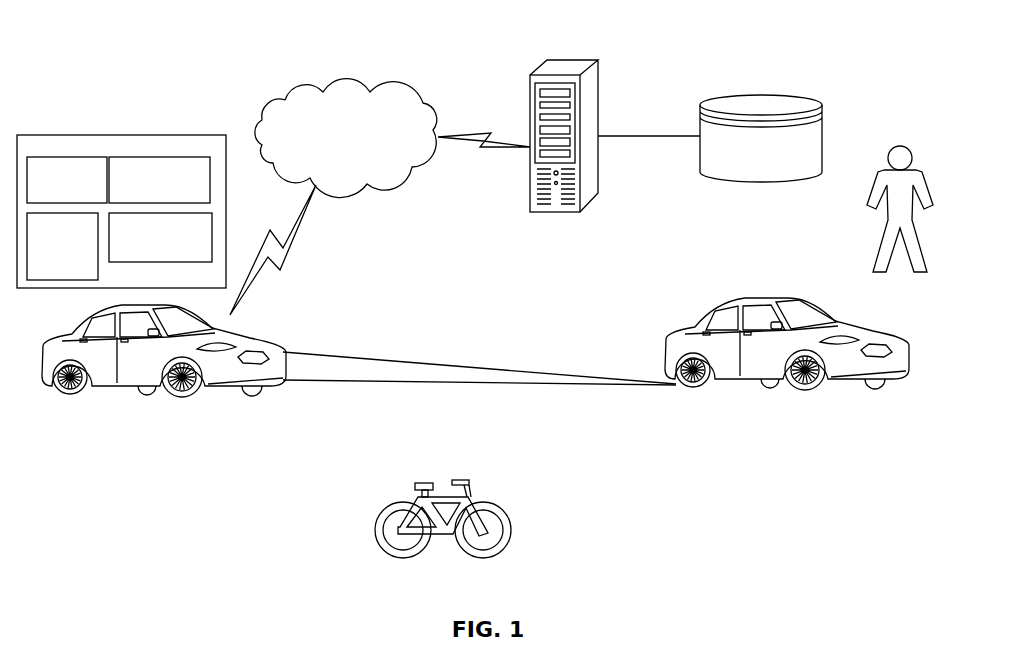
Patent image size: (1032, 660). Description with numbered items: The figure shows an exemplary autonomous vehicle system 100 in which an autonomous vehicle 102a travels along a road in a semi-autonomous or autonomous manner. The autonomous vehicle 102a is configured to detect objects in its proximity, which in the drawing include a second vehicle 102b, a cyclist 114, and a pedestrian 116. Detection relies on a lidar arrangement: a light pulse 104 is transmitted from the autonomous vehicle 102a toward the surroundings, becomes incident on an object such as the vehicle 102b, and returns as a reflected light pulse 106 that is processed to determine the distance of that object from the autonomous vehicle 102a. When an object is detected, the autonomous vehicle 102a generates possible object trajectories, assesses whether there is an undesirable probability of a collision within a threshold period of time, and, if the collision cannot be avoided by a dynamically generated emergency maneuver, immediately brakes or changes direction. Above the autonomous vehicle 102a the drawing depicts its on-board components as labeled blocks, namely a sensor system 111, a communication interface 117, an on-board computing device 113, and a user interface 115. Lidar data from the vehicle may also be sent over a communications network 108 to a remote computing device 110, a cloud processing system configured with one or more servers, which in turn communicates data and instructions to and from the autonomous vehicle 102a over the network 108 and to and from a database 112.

The autonomous vehicle system 100 is at (119, 92).
The autonomous vehicle 102a is at (119, 388).
The vehicle 102b is at (742, 381).
The light pulse 104 is at (534, 374).
The reflected light pulse 106 is at (575, 387).
The communications network 108 is at (345, 78).
The remote computing device 110 is at (570, 62).
The sensor system 111 is at (67, 180).
The database 112 is at (767, 95).
The on-board computing device 113 is at (62, 246).
The cyclist 114 is at (512, 527).
The user interface 115 is at (160, 237).
The pedestrian 116 is at (897, 232).
The communication interface 117 is at (159, 180).